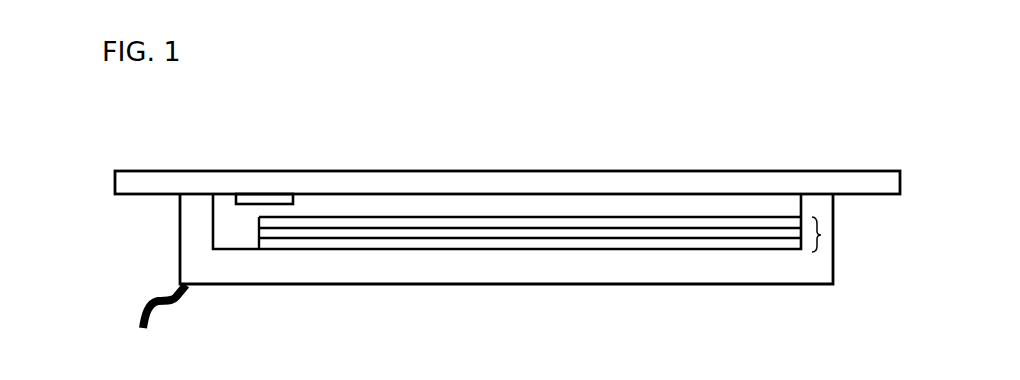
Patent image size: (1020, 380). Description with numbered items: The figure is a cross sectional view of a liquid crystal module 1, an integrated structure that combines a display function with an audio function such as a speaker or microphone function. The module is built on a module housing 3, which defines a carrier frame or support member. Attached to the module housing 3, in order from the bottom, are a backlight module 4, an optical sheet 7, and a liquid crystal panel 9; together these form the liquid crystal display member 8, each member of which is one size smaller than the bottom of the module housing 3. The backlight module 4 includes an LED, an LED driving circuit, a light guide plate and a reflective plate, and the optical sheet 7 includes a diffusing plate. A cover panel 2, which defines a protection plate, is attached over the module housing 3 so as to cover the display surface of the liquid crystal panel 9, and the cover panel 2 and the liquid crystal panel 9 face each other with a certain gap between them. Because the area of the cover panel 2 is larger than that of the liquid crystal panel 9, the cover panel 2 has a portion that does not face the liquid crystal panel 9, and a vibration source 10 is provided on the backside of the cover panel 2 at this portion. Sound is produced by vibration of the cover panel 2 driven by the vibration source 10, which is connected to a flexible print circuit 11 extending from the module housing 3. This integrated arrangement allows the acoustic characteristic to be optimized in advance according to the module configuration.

The liquid crystal module 1 is at (545, 125).
The cover panel 2 is at (667, 184).
The module housing 3 is at (558, 285).
The backlight module 4 is at (722, 245).
The optical sheet 7 is at (457, 232).
The liquid crystal display member 8 is at (821, 234).
The liquid crystal panel 9 is at (358, 222).
The vibration source 10 is at (235, 198).
The flexible print circuit 11 is at (170, 308).